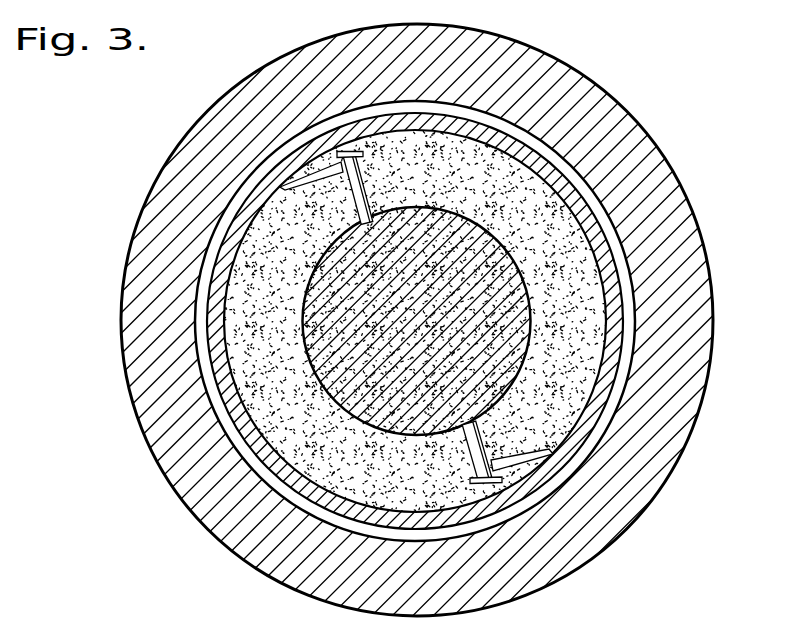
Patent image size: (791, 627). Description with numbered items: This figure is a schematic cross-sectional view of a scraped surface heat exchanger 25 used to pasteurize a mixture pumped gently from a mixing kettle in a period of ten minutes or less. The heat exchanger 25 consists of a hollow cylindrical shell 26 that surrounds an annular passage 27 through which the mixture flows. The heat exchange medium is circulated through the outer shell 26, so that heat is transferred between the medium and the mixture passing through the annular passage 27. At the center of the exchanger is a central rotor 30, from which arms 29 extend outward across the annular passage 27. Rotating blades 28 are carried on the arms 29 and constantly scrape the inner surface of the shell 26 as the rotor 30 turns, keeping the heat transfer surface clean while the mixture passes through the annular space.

The scraped surface heat exchanger 25 is at (106, 337).
The hollow cylindrical shell 26 is at (690, 278).
The annular passage 27 is at (437, 172).
The rotating blades 28 is at (543, 455).
The arms 29 is at (468, 458).
The central rotor 30 is at (425, 302).